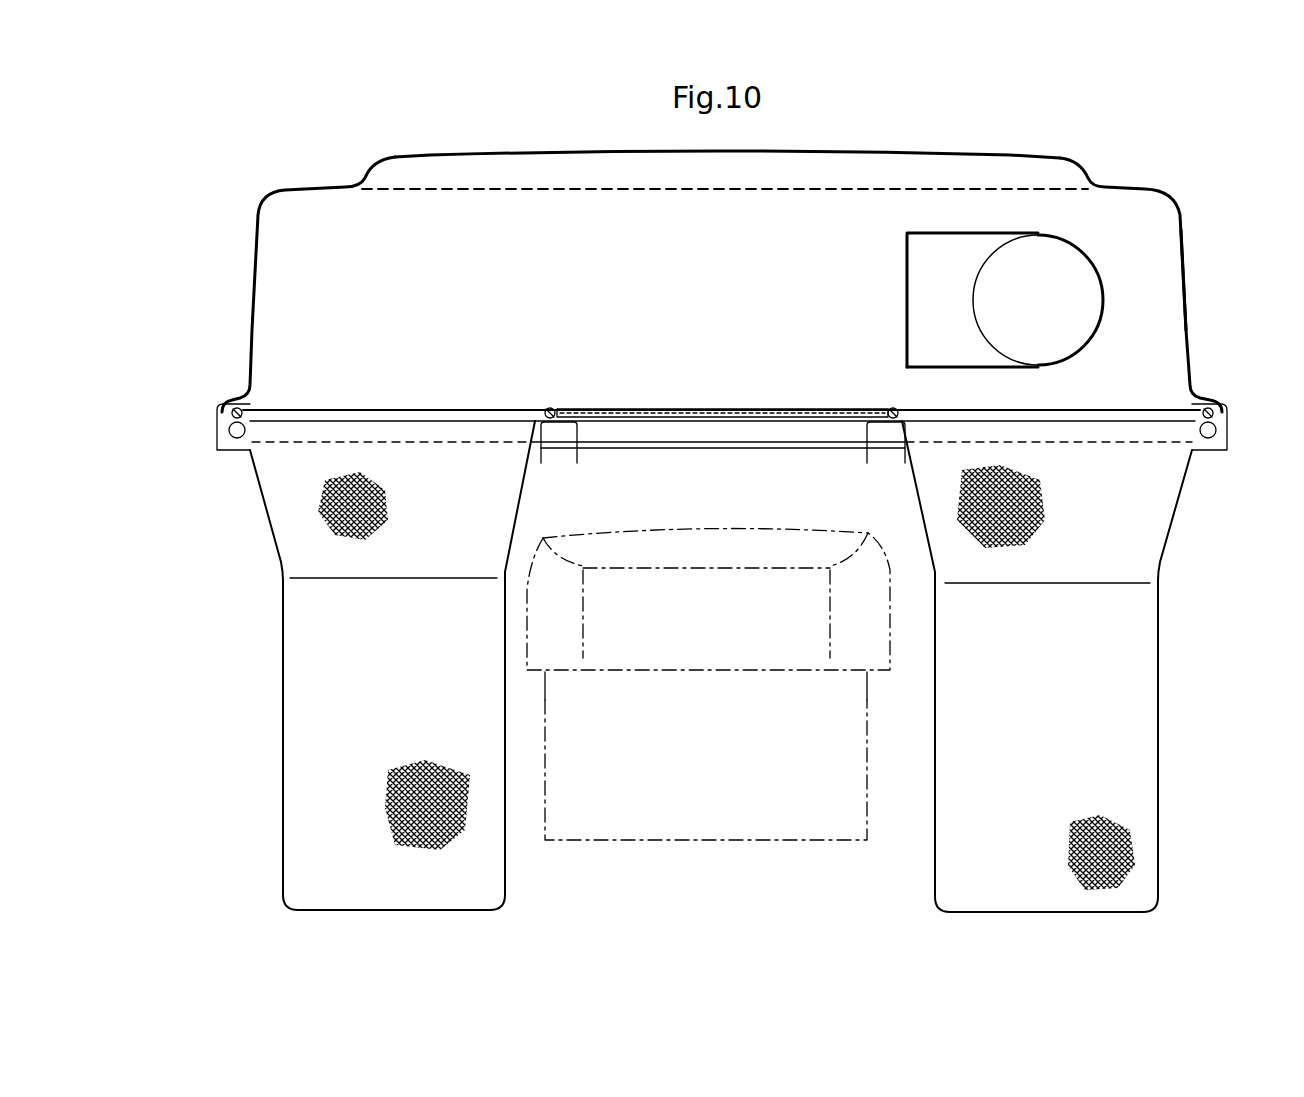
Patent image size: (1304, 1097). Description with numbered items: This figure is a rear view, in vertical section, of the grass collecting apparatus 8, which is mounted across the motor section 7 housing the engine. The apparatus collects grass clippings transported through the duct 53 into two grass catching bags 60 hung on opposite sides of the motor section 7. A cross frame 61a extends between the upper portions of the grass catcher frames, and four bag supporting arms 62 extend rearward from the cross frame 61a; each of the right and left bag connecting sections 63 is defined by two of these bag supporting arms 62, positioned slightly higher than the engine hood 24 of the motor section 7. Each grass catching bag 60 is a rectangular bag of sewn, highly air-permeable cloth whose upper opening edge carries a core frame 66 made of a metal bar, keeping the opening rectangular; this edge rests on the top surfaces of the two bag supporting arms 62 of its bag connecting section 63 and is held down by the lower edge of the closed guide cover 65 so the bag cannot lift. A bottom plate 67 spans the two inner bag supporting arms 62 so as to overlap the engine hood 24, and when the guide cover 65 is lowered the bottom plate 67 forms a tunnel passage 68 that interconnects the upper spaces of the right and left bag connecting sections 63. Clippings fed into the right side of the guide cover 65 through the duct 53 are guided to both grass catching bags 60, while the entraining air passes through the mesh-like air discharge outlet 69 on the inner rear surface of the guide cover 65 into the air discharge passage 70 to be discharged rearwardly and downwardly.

The grass collecting apparatus 8 is at (253, 178).
The air discharge passage 70 is at (822, 171).
The mesh-like air discharge outlet 69 is at (550, 193).
The duct 53 is at (1065, 233).
The guide cover 65 is at (1188, 258).
The tunnel passage 68 is at (762, 294).
The bag connecting section 63 is at (387, 383).
The bottom plate 67 is at (700, 407).
The core frame 66 is at (222, 407).
The bag supporting arm 62 is at (237, 445).
The cross frame 61a is at (724, 442).
The engine hood 24 is at (530, 609).
The grass catching bag 60 is at (281, 770).
The motor section 7 is at (665, 842).